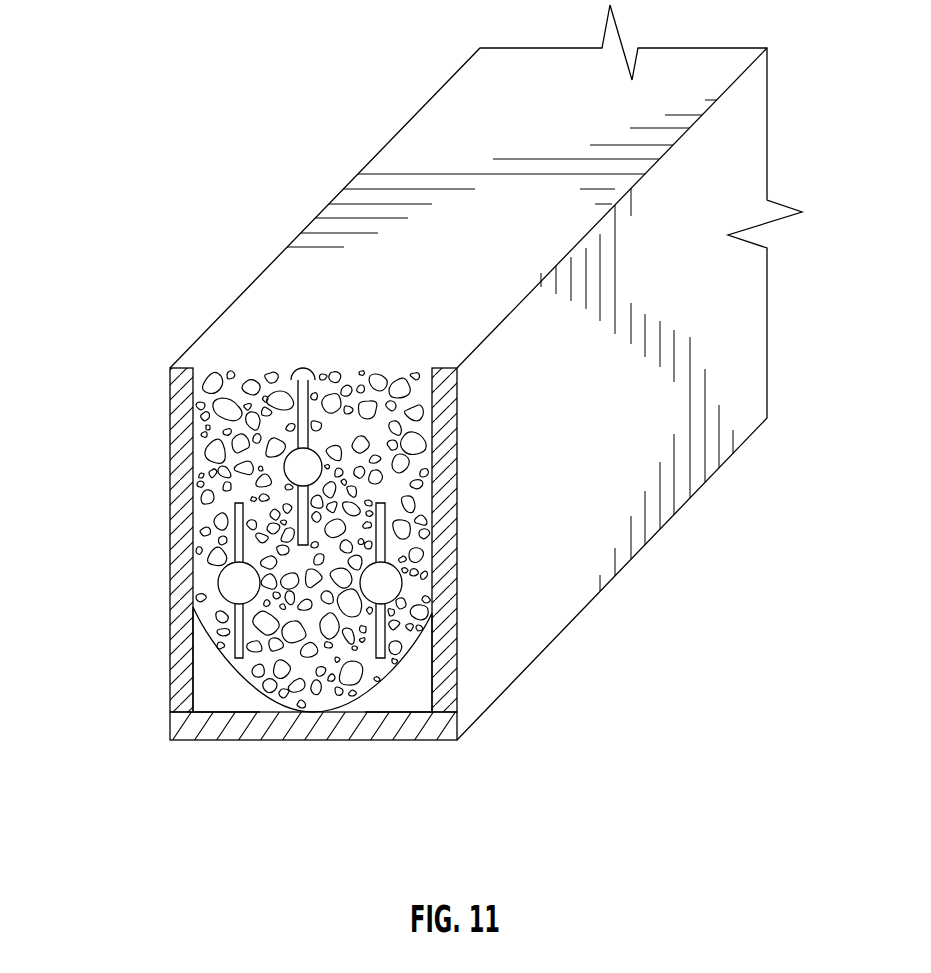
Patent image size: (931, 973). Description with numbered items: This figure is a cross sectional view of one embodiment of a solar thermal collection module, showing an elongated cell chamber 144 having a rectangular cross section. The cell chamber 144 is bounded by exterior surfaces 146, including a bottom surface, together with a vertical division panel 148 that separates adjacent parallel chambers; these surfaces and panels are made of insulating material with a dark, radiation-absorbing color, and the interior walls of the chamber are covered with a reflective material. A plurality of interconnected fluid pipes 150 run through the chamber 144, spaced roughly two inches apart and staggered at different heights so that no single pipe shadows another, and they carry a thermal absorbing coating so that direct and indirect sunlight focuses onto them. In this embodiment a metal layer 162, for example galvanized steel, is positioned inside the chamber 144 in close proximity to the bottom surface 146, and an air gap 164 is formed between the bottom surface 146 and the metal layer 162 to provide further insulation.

The cell chamber 144 is at (407, 430).
The exterior surface 146 is at (170, 432).
The vertical division panel 148 is at (457, 553).
The interconnected fluid pipe 150 is at (372, 564).
The metal layer 162 is at (383, 680).
The air gap 164 is at (215, 695).